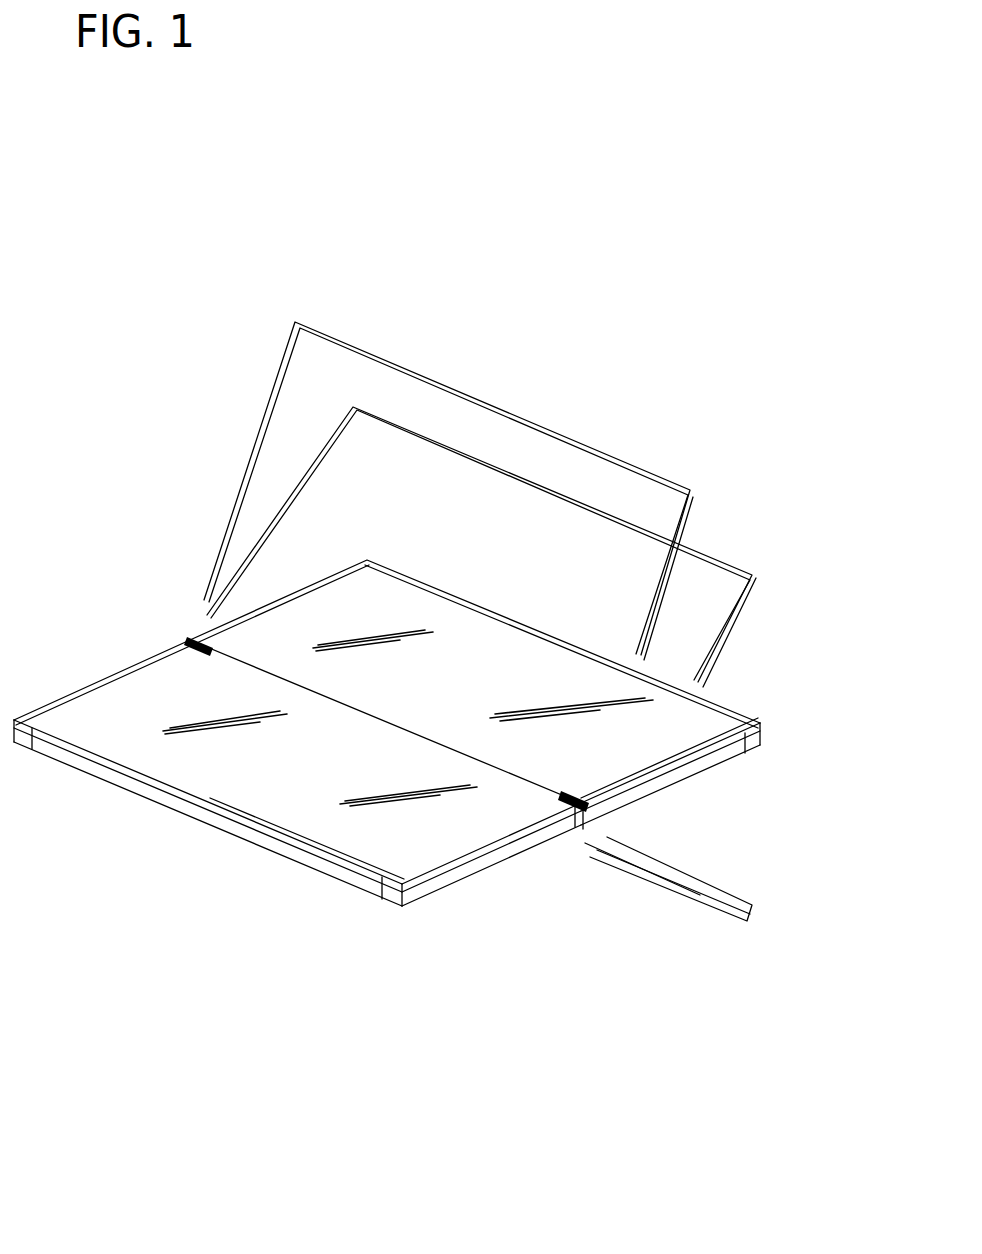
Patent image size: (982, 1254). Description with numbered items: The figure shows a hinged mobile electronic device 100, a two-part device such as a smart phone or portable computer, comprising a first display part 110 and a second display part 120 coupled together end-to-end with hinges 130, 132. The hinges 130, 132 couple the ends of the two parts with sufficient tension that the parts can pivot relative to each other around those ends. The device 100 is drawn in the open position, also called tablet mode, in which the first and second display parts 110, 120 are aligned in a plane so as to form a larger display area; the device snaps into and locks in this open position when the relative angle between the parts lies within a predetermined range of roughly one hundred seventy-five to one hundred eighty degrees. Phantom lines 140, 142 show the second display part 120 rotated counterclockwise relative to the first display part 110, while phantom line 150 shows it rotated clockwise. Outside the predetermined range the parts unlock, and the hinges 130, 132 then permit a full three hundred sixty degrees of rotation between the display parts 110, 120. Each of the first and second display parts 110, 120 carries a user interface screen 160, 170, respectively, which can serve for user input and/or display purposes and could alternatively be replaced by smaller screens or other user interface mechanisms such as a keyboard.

The hinged mobile electronic device 100 is at (372, 240).
The first display part 110 is at (418, 875).
The second display part 120 is at (693, 765).
The hinge 130 is at (587, 805).
The hinge 132 is at (200, 645).
The phantom line 140 is at (737, 590).
The phantom line 142 is at (541, 440).
The phantom line 150 is at (750, 917).
The user interface screen 160 is at (305, 810).
The user interface screen 170 is at (445, 726).